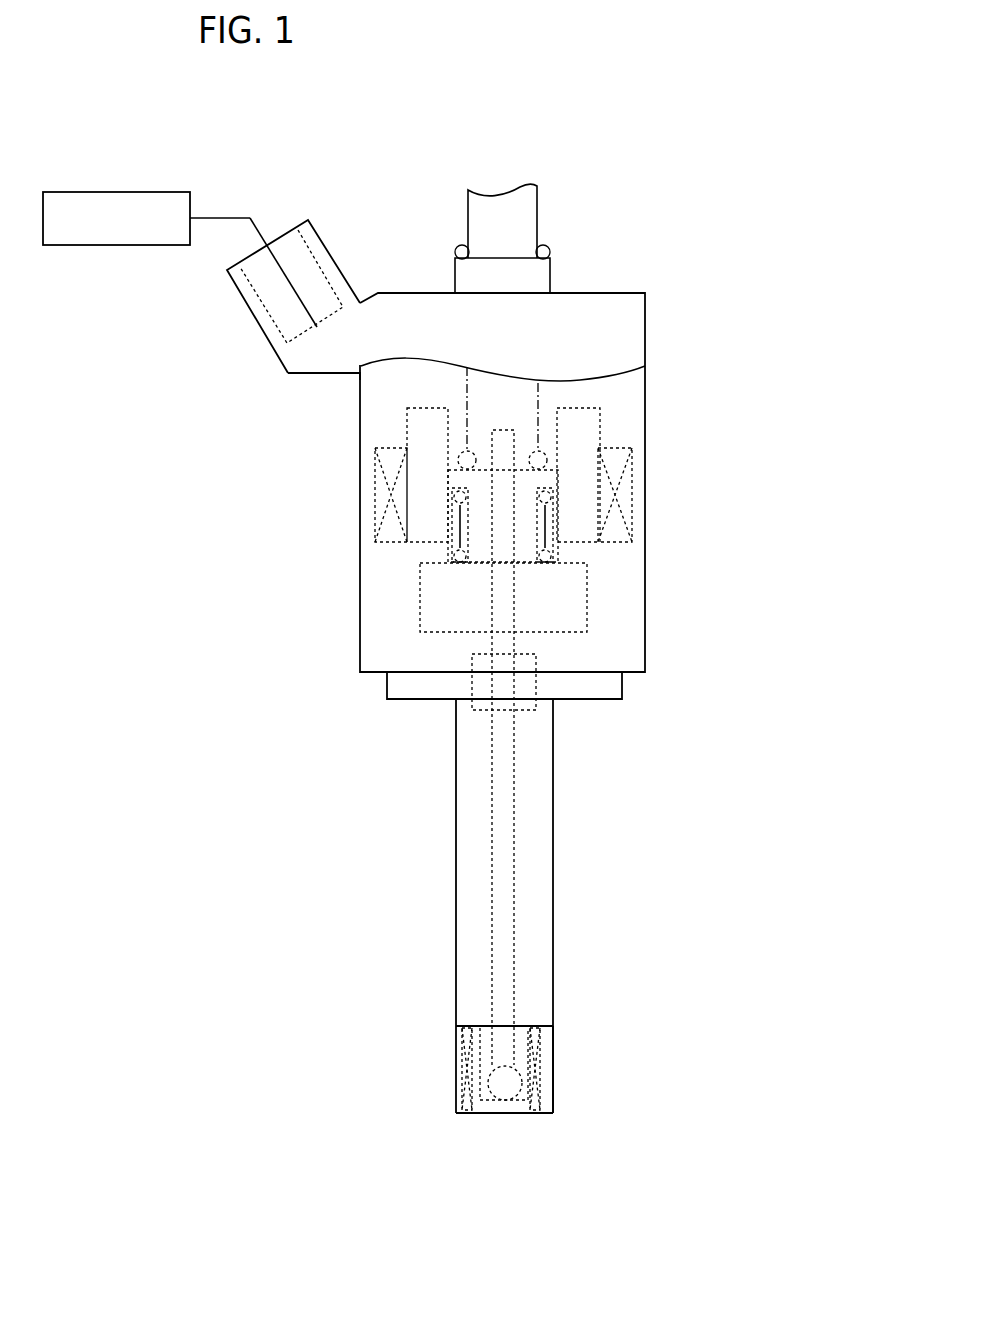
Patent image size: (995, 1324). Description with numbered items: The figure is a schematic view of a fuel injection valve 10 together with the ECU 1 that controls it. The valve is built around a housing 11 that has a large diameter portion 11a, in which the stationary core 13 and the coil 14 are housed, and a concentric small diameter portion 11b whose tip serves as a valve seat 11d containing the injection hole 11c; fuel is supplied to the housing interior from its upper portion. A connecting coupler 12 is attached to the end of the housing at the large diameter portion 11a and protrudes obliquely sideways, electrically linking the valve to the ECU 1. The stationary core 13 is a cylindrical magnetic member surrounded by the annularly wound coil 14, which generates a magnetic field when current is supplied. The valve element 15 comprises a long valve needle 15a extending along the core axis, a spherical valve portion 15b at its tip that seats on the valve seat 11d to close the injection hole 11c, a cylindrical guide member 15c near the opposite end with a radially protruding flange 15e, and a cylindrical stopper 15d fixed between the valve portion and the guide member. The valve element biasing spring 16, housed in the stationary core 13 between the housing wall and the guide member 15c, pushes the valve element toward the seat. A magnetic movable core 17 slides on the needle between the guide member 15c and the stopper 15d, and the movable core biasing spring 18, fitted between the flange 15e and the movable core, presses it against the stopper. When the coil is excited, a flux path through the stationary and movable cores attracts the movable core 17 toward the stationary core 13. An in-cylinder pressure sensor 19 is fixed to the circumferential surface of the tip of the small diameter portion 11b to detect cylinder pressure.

The ECU 1 is at (137, 191).
The fuel injection valve 10 is at (641, 157).
The housing 11 is at (645, 390).
The large diameter portion 11a is at (360, 408).
The small diameter portion 11b is at (456, 838).
The injection hole 11c is at (503, 1113).
The valve seat 11d is at (532, 1113).
The connecting coupler 12 is at (277, 308).
The stationary core 13 is at (582, 427).
The coil 14 is at (448, 477).
The valve element 15 is at (523, 848).
The valve needle 15a is at (497, 781).
The valve portion 15b is at (498, 1083).
The guide member 15c is at (485, 536).
The stopper 15d is at (478, 683).
The flange 15e is at (452, 493).
The valve element biasing spring 16 is at (467, 430).
The movable core 17 is at (572, 595).
The movable core biasing spring 18 is at (458, 545).
The in-cylinder pressure sensor 19 is at (542, 1037).